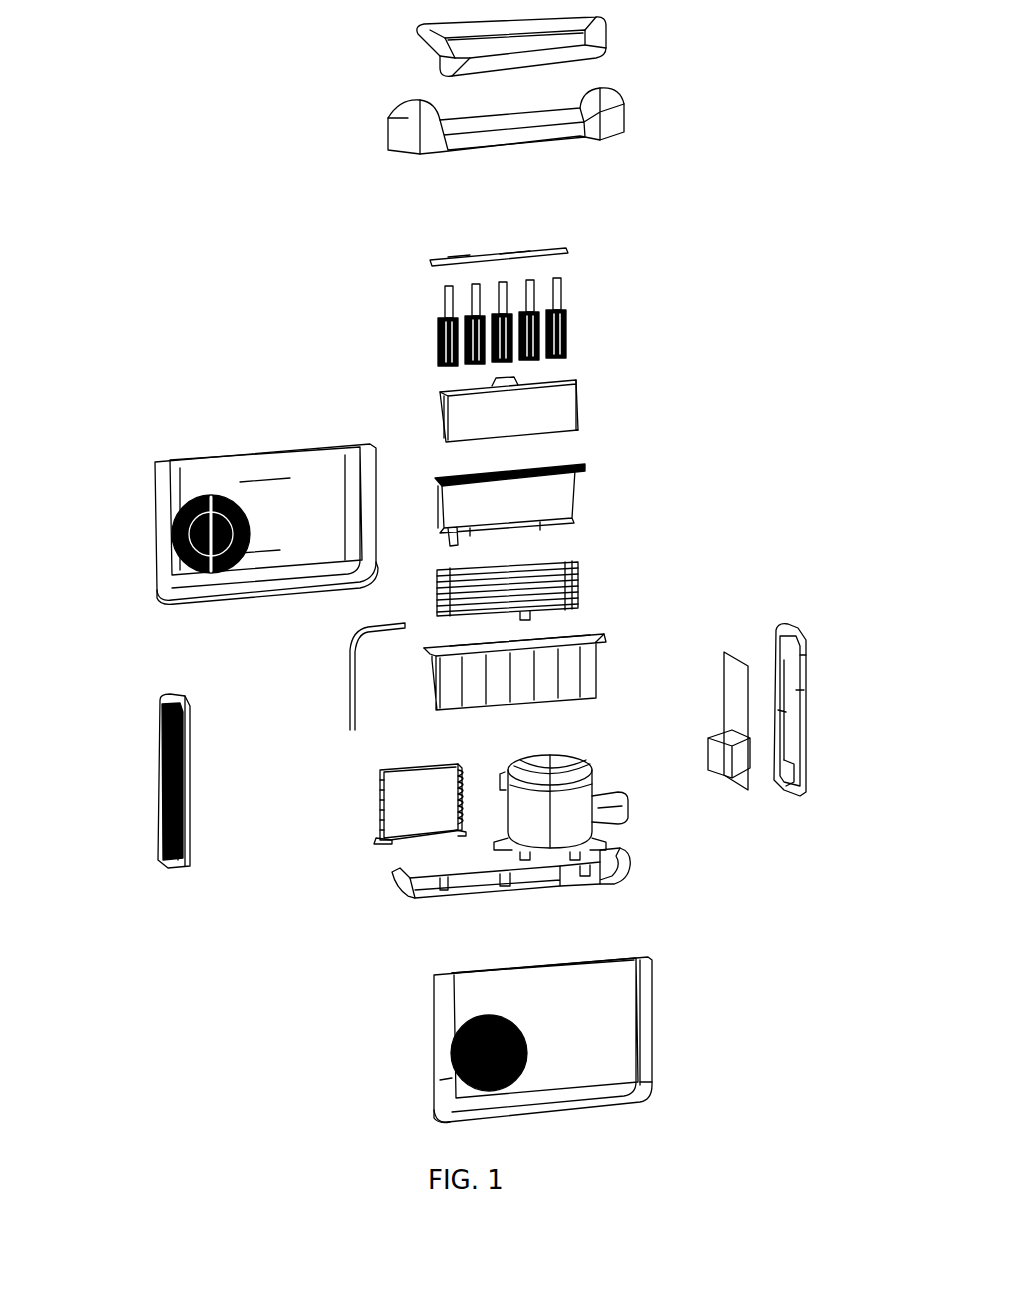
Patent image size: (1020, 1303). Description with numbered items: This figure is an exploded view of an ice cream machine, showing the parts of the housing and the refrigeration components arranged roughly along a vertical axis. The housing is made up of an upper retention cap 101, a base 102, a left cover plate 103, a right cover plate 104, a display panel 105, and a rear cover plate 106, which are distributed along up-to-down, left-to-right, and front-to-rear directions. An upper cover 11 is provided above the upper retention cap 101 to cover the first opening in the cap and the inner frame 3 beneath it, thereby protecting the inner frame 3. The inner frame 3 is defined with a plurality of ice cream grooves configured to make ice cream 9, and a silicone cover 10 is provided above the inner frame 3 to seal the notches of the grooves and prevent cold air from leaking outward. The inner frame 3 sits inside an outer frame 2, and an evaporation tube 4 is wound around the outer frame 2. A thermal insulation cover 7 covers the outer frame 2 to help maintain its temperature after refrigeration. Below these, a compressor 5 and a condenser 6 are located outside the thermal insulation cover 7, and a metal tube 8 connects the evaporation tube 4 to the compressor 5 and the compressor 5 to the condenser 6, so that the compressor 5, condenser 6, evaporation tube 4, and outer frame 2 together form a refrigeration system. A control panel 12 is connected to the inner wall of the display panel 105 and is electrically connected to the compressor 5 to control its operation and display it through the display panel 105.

The upper cover 11 is at (420, 50).
The upper retention cap 101 is at (422, 133).
The silicone cover 10 is at (568, 250).
The ice cream 9 is at (560, 298).
The inner frame 3 is at (555, 417).
The outer frame 2 is at (553, 500).
The evaporation tube 4 is at (568, 587).
The thermal insulation cover 7 is at (596, 670).
The metal tube 8 is at (349, 693).
The left cover plate 103 is at (335, 485).
The rear cover plate 106 is at (163, 858).
The condenser 6 is at (398, 807).
The compressor 5 is at (557, 805).
The control panel 12 is at (733, 757).
The display panel 105 is at (803, 753).
The base 102 is at (548, 886).
The right cover plate 104 is at (617, 1032).